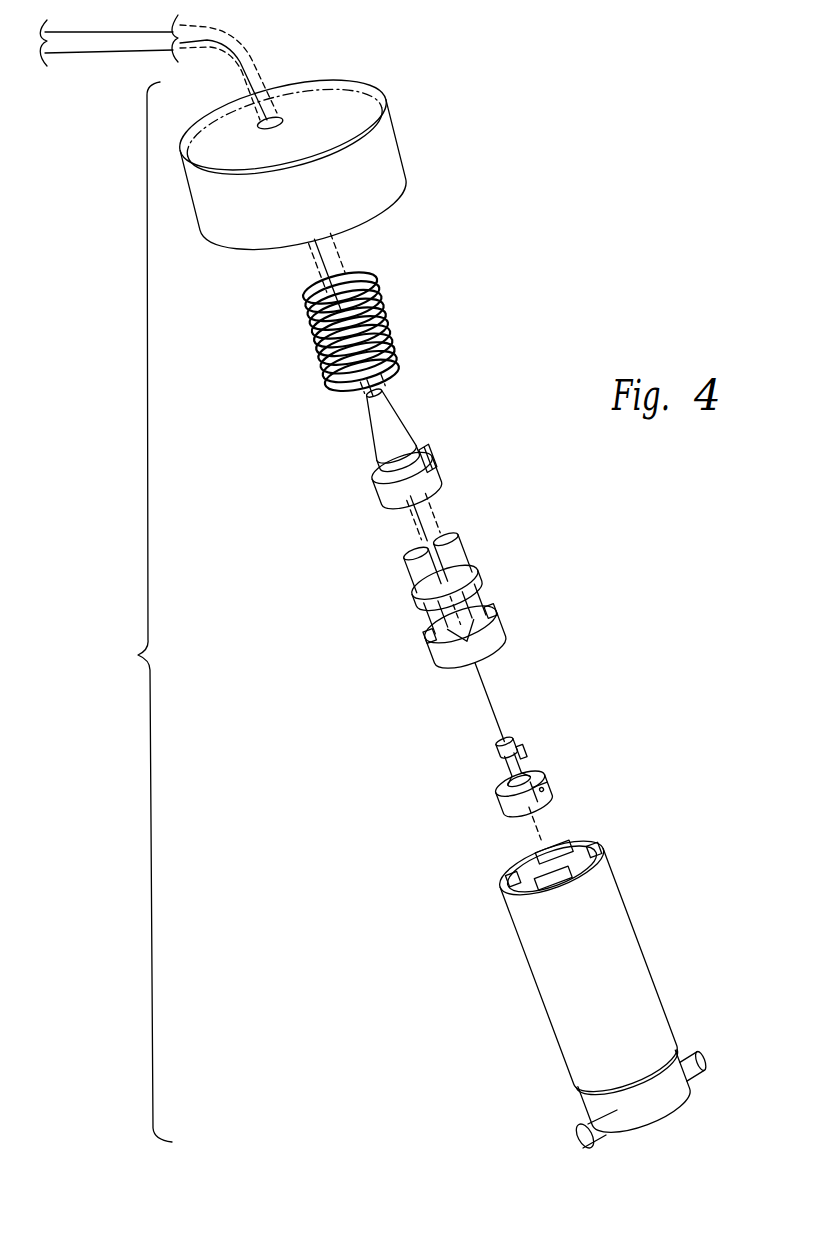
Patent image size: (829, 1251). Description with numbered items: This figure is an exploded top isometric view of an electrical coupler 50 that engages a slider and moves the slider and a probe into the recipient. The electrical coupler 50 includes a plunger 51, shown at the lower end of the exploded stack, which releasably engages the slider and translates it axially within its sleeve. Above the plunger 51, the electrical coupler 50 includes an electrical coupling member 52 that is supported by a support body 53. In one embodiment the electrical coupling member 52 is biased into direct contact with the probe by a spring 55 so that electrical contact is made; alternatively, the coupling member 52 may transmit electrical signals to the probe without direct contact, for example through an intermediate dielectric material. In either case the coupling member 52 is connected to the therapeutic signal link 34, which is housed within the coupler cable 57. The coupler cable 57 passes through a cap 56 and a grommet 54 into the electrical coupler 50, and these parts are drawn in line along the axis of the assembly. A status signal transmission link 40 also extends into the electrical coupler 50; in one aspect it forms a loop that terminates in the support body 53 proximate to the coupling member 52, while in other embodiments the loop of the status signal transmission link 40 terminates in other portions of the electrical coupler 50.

The therapeutic signal link 34 is at (240, 52).
The status signal transmission link 40 is at (266, 78).
The electrical coupler 50 is at (137, 655).
The plunger 51 is at (647, 968).
The electrical coupling member 52 is at (543, 778).
The support body 53 is at (500, 613).
The grommet 54 is at (412, 440).
The spring 55 is at (392, 320).
The cap 56 is at (393, 157).
The coupler cable 57 is at (117, 53).